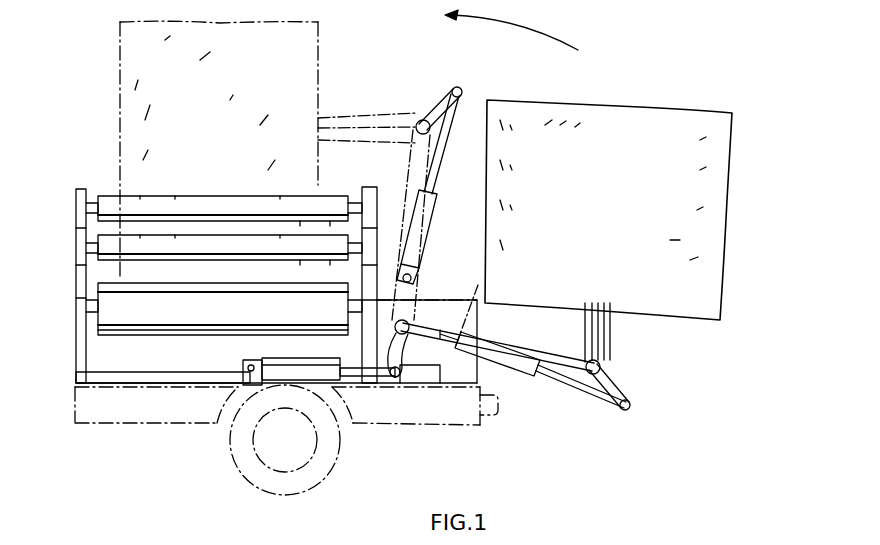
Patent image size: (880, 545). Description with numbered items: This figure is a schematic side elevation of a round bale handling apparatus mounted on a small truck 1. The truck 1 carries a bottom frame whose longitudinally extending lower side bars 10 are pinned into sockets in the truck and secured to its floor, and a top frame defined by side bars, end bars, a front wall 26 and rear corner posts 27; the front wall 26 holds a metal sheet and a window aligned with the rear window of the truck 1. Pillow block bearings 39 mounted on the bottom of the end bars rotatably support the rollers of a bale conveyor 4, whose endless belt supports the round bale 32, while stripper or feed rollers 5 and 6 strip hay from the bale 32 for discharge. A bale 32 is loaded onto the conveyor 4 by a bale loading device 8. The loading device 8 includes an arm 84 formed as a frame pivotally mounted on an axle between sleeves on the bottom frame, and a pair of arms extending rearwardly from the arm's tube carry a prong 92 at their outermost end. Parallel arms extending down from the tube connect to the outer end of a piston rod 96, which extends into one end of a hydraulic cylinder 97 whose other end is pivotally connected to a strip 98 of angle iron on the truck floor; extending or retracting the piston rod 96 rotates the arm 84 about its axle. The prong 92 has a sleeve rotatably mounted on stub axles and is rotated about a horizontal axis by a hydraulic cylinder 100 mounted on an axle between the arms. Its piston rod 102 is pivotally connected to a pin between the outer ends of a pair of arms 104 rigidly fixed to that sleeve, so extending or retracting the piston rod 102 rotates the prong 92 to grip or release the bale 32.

The truck 1 is at (114, 412).
The bale conveyor 4 is at (152, 328).
The stripper or feed roller 5 is at (98, 208).
The stripper or feed roller 6 is at (98, 248).
The bale loading device 8 is at (660, 402).
The lower side bar 10 is at (167, 378).
The front wall 26 is at (88, 188).
The rear corner post 27 is at (368, 188).
The round bale 32 is at (305, 72).
The pillow block bearing 39 is at (86, 327).
The arm 84 is at (412, 285).
The prong 92 is at (366, 115).
The piston rod 96 is at (368, 382).
The hydraulic cylinder 97 is at (330, 372).
The strip of angle iron 98 is at (248, 360).
The hydraulic cylinder 100 is at (425, 242).
The piston rod 102 is at (440, 168).
The arm 104 is at (445, 88).